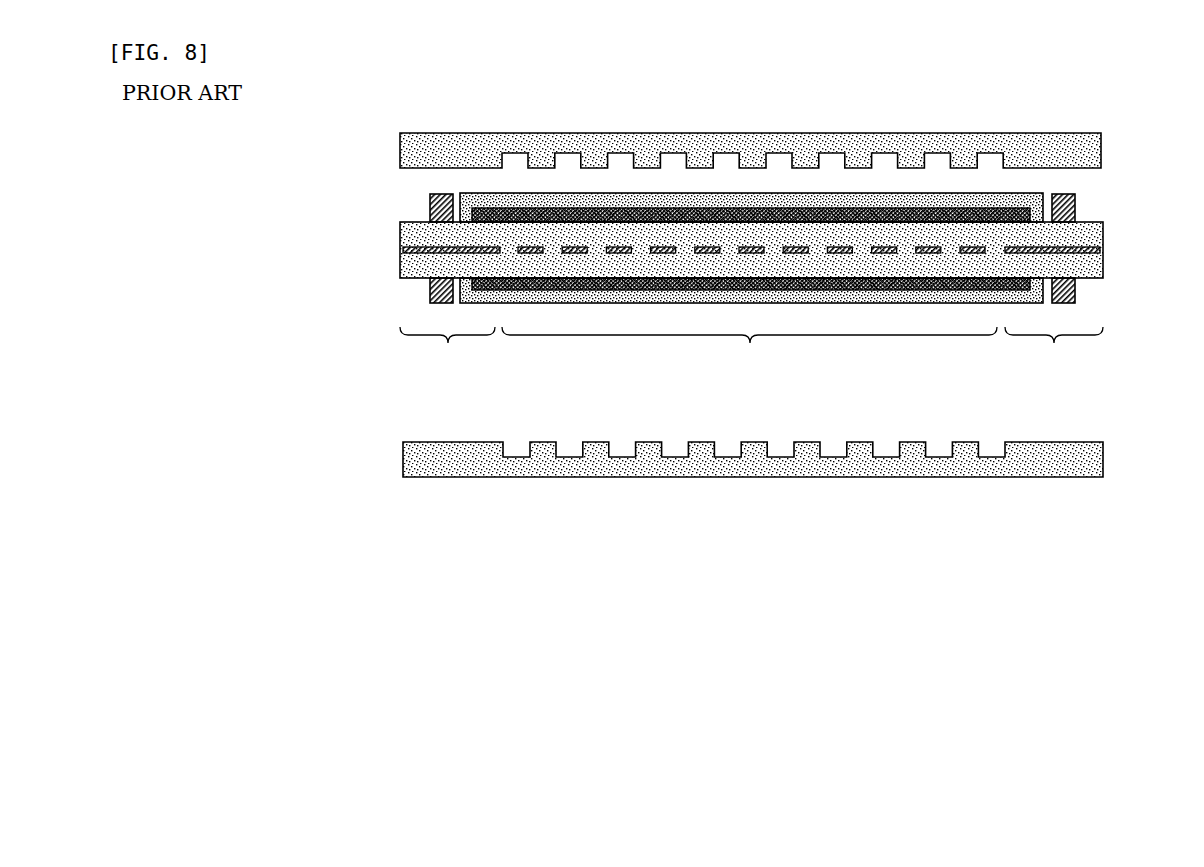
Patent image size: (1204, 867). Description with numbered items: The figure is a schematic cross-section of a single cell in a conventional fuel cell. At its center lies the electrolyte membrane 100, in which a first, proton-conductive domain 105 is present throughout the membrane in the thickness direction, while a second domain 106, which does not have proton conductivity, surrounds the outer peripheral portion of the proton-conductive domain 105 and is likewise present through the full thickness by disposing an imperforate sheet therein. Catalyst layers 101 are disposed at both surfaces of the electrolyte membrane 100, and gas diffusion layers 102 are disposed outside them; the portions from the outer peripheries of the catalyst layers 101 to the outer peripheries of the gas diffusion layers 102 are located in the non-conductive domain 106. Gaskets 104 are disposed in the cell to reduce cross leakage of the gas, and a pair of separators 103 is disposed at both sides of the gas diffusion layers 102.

The electrolyte membrane 100 is at (1125, 218).
The catalyst layers 101 is at (981, 272).
The gas diffusion layers 102 is at (888, 292).
The separators 103 is at (757, 133).
The gaskets 104 is at (432, 298).
The domain 1 105 is at (749, 351).
The domain 2 106 is at (751, 352).